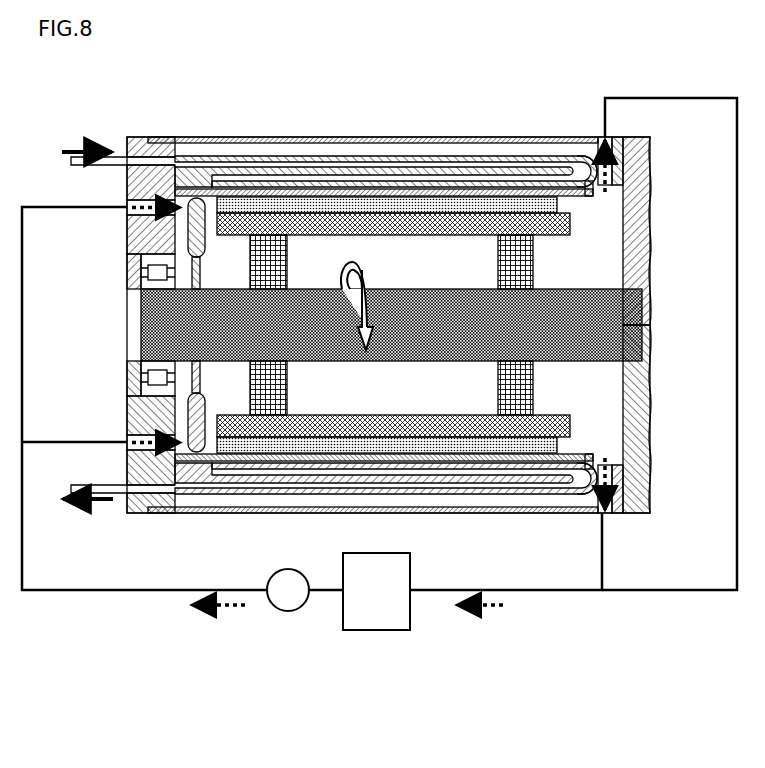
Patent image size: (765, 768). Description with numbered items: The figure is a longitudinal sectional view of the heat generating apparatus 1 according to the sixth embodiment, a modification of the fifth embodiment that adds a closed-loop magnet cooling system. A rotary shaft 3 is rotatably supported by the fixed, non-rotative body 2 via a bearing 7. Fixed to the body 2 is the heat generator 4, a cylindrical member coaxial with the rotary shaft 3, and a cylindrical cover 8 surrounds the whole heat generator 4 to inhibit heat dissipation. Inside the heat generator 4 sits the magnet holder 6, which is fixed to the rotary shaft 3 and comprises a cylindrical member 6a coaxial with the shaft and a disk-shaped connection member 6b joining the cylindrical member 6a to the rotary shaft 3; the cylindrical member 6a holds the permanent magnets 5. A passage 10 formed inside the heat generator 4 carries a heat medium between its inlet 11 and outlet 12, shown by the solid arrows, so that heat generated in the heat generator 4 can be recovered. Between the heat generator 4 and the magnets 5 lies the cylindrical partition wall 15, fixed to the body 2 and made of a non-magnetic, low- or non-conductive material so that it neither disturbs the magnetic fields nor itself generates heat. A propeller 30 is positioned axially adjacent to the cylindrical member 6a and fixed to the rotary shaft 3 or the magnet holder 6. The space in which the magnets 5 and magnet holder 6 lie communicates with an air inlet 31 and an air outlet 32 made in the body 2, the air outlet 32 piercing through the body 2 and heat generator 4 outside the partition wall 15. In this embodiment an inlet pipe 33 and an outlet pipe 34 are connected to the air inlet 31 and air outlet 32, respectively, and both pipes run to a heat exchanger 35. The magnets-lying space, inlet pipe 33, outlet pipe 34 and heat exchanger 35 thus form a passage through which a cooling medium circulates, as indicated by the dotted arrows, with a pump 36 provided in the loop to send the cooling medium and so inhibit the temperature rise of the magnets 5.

The heat generating apparatus 1 is at (166, 123).
The body 2 is at (133, 136).
The rotary shaft 3 is at (143, 312).
The heat generator 4 is at (315, 157).
The permanent magnets 5 is at (565, 200).
The magnet holder 6 is at (77, 233).
The cylindrical member 6a is at (217, 225).
The connection member 6b is at (253, 253).
The bearing 7 is at (143, 367).
The cover 8 is at (401, 137).
The passage 10 is at (345, 169).
The inlet 11 is at (72, 165).
The outlet 12 is at (57, 486).
The partition wall 15 is at (445, 191).
The propeller 30 is at (187, 418).
The air inlet 31 is at (127, 203).
The air outlet 32 is at (610, 136).
The inlet pipe 33 is at (32, 210).
The outlet pipe 34 is at (678, 98).
The heat exchanger 35 is at (410, 612).
The pump 36 is at (300, 613).